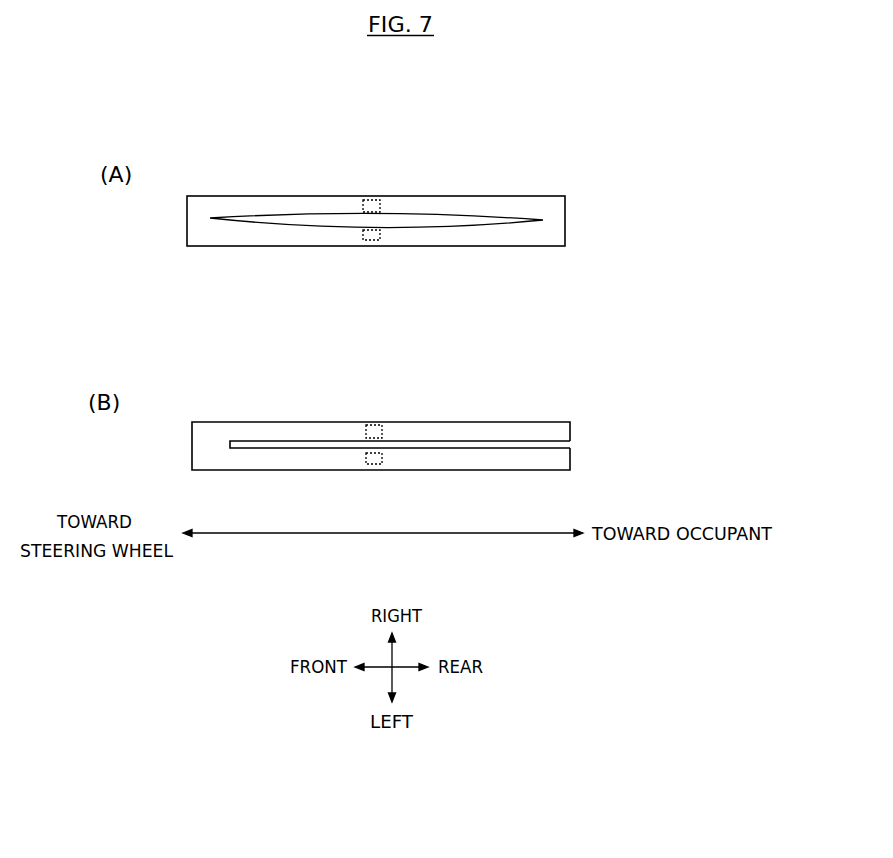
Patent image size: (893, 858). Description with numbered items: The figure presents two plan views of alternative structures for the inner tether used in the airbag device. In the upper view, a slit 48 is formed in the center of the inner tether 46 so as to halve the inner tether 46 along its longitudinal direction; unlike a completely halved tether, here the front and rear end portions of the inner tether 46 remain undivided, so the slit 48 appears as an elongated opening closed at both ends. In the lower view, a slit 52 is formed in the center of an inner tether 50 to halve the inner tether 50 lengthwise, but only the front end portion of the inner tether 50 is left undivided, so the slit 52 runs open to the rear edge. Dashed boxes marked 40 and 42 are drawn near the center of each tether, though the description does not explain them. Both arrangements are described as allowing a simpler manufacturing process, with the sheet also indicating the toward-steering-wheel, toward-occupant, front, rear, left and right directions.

The first stitching portion 40 is at (366, 238).
The second stitching portion 42 is at (369, 199).
The inner tether 46 is at (540, 197).
The slit 48 is at (410, 222).
The inner tether 50 is at (541, 422).
The slit 52 is at (453, 441).